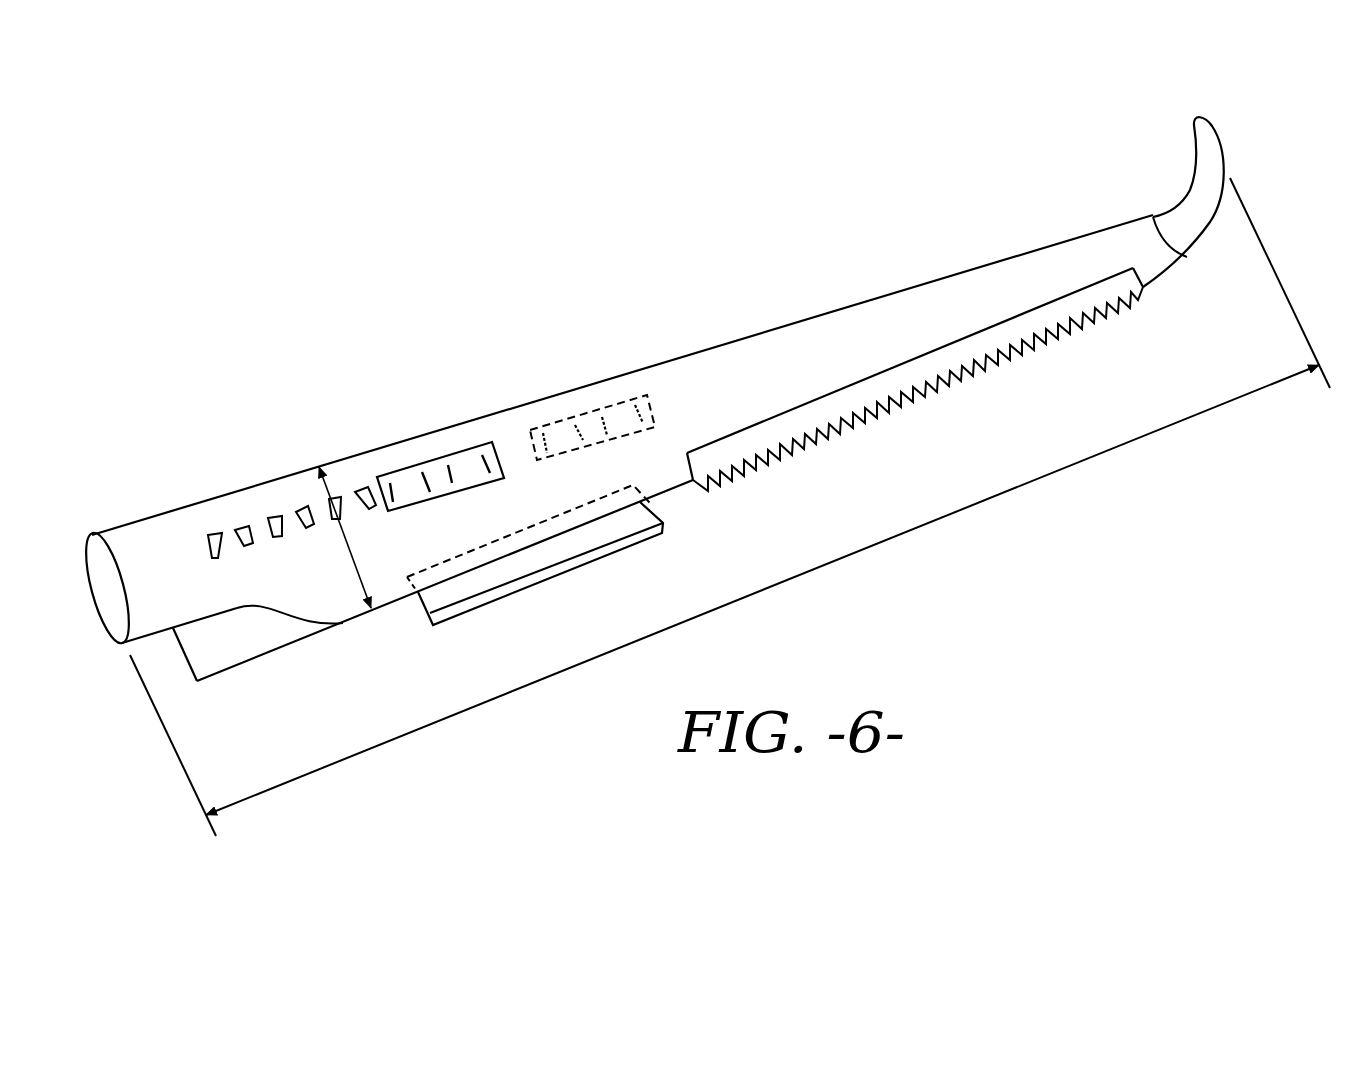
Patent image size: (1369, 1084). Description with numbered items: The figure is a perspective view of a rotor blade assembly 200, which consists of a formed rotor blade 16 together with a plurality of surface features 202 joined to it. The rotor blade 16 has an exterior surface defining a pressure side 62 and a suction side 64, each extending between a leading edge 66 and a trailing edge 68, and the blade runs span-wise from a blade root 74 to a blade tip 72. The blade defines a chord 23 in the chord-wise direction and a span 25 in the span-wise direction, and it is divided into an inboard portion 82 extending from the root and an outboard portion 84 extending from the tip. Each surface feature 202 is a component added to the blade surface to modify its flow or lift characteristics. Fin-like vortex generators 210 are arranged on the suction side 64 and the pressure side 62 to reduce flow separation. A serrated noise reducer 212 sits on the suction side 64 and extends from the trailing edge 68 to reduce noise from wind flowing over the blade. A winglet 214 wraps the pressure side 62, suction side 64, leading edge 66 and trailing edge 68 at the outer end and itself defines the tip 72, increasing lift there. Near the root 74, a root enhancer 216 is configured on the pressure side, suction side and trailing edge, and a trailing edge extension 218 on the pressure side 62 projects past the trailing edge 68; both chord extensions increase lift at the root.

The rotor blade assembly 200 is at (352, 310).
The rotor blade 16 is at (482, 387).
The pressure side 62 is at (750, 360).
The blade root 74 is at (108, 595).
The root enhancer 216 is at (218, 650).
The span 25 is at (350, 568).
The vortex generator 210 is at (263, 523).
The leading edge 66 is at (670, 361).
The surface feature 202 is at (213, 530).
The suction side 64 is at (553, 490).
The inboard portion 82 is at (412, 618).
The trailing edge extension 218 is at (507, 603).
The trailing edge 68 is at (683, 488).
The outboard portion 84 is at (950, 410).
The noise reducer 212 is at (888, 385).
The blade tip 72 is at (1193, 115).
The winglet 214 is at (1207, 207).
The chord 23 is at (867, 553).